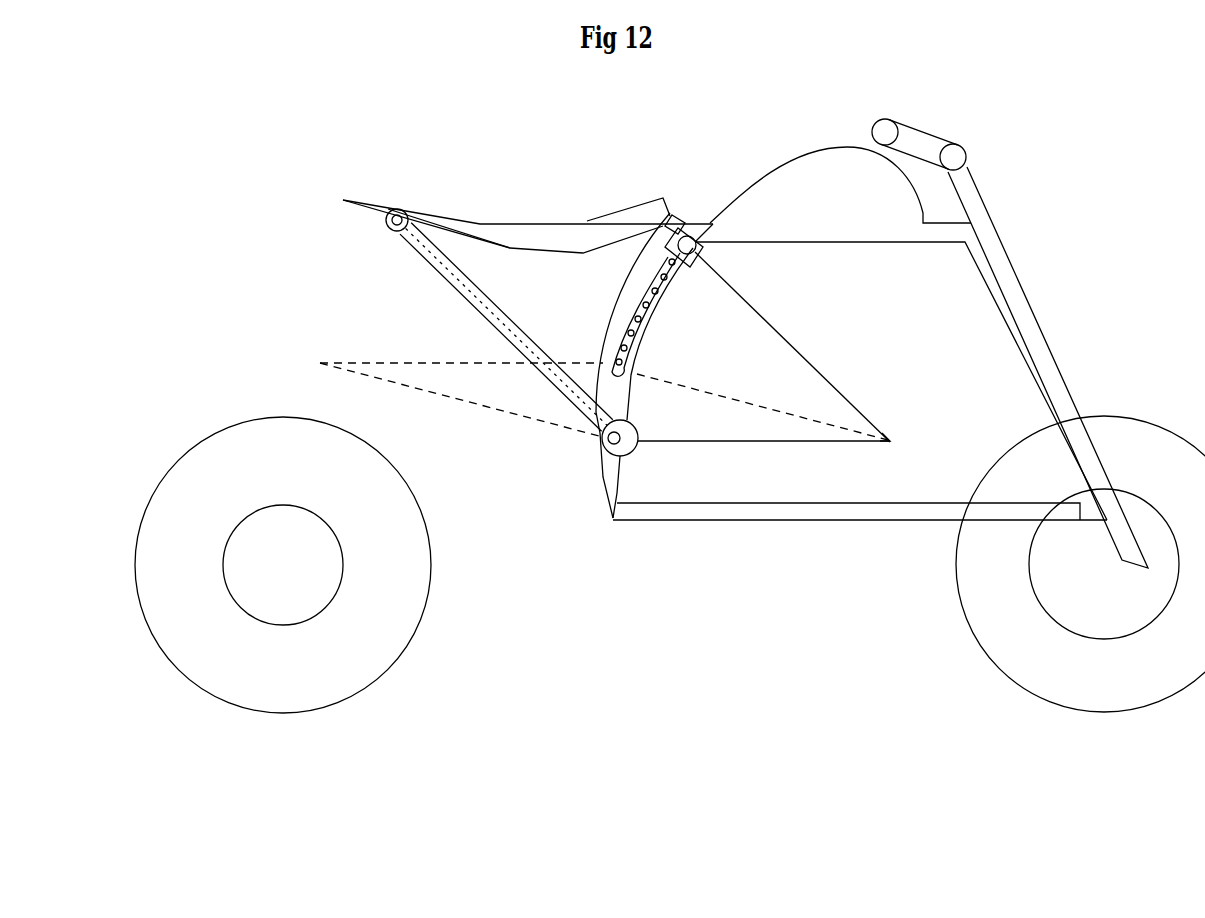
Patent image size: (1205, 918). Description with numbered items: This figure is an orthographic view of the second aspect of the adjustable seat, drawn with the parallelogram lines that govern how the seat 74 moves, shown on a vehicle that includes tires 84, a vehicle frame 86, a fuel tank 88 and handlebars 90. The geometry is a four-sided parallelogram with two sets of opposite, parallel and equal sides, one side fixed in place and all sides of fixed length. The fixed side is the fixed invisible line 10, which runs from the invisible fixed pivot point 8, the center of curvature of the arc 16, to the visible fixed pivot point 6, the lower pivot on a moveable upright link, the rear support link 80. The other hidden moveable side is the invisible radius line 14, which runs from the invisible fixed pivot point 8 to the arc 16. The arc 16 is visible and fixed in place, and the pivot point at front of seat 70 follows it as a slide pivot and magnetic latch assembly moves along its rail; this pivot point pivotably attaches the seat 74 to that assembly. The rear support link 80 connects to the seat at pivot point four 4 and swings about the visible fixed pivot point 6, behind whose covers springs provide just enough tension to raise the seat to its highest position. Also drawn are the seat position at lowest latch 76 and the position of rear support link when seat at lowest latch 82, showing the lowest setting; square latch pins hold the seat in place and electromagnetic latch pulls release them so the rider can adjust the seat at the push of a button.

The pivot point four 4 is at (386, 230).
The visible fixed pivot point 6 is at (630, 454).
The invisible fixed pivot point 8 is at (895, 440).
The fixed invisible line 10 is at (727, 442).
The invisible radius line 14 is at (773, 310).
The arc 16 is at (620, 295).
The pivot point at front of seat 70 is at (680, 217).
The seat 74 is at (530, 223).
The seat position at lowest latch 76 is at (438, 363).
The rear support link 80 is at (413, 253).
The position of rear support link when seat at lowest latch 82 is at (467, 402).
The tires 84 is at (281, 417).
The vehicle frame 86 is at (897, 503).
The fuel tank 88 is at (800, 163).
The handlebars 90 is at (963, 150).